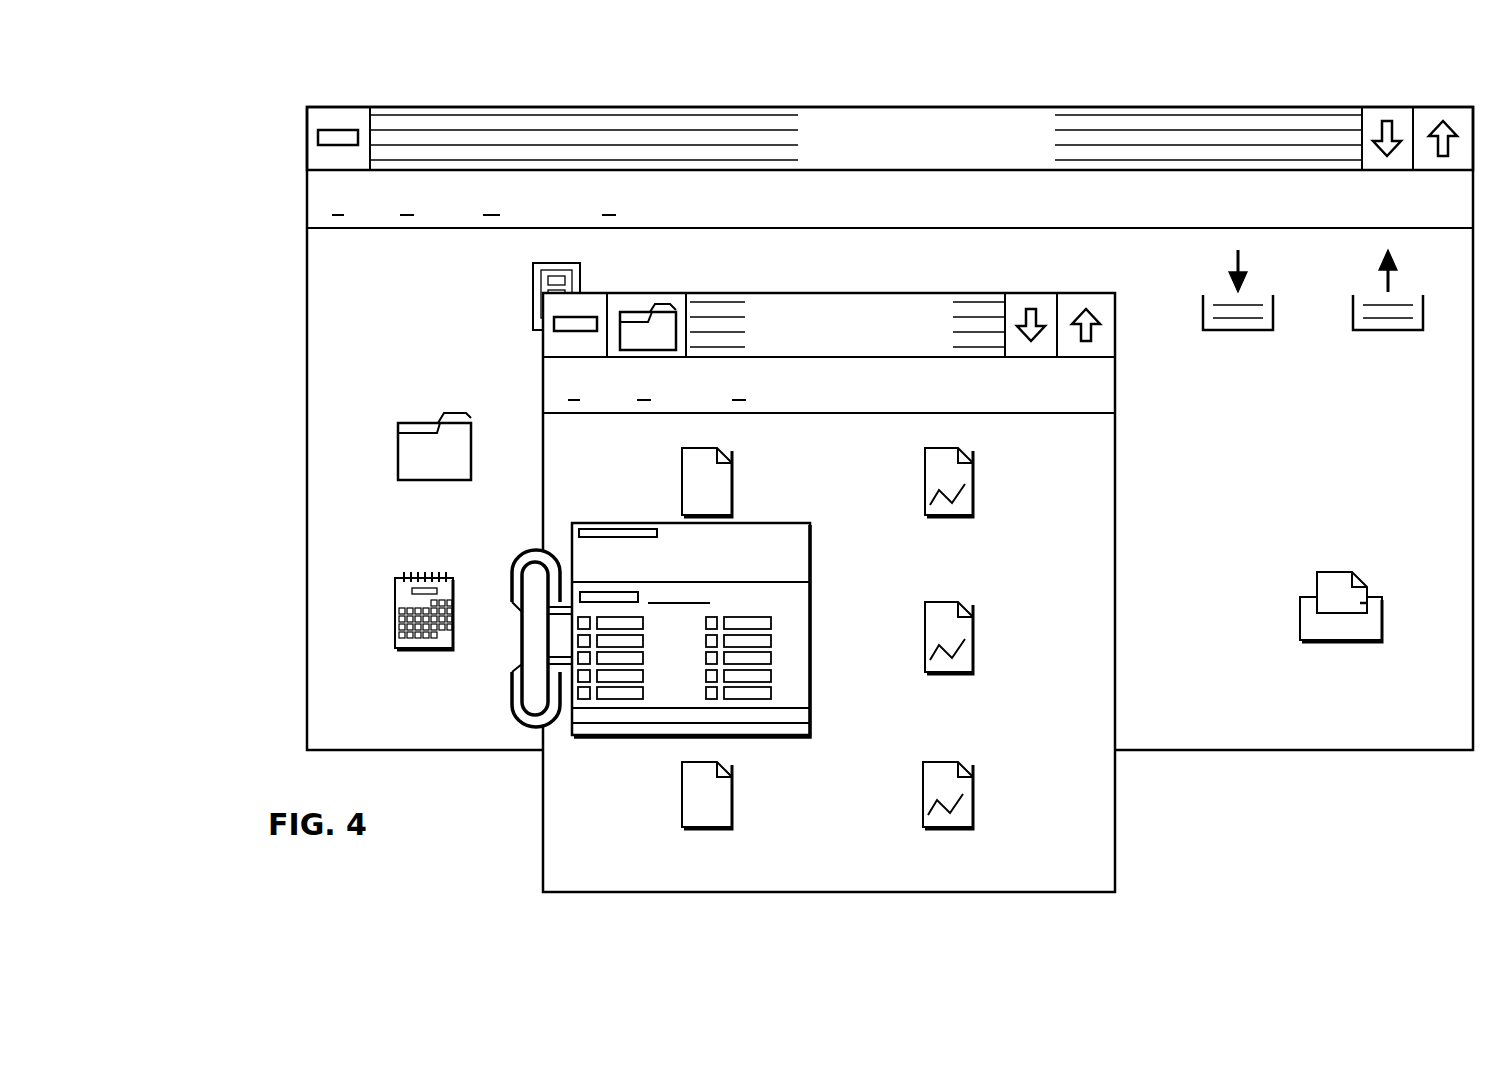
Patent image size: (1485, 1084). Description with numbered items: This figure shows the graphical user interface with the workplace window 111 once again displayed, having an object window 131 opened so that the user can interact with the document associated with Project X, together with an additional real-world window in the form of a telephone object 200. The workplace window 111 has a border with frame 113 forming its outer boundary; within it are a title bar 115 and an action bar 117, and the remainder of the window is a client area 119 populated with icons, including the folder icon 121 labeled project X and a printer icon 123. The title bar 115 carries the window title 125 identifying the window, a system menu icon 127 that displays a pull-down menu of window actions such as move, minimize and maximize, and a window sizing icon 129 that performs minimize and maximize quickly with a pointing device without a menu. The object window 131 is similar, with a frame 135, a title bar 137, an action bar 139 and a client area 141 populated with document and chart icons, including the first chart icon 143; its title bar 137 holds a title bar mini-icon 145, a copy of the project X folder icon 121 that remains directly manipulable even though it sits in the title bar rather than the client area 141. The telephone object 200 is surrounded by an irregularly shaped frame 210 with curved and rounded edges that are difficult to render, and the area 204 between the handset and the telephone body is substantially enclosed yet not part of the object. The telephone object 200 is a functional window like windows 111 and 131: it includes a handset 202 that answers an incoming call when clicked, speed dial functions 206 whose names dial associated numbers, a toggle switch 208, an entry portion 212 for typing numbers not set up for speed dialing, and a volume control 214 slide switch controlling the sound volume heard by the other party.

The workplace window 111 is at (257, 110).
The frame 113 is at (307, 475).
The title bar 115 is at (1195, 107).
The action bar 117 is at (350, 228).
The client area 119 is at (1265, 481).
The folder icon 121 is at (398, 450).
The printer icon 123 is at (1368, 598).
The window title 125 is at (921, 107).
The system menu icon 127 is at (340, 118).
The window sizing icon 129 is at (1385, 107).
The object window 131 is at (1115, 560).
The frame 135 is at (1115, 828).
The title bar 137 is at (862, 293).
The action bar 139 is at (835, 390).
The client area 141 is at (880, 637).
The chart 1 icon 143 is at (966, 458).
The title bar mini-icon 145 is at (633, 340).
The telephone object 200 is at (773, 738).
The handset 202 is at (513, 712).
The area 204 is at (565, 712).
The speed dial functions 206 is at (657, 675).
The toggle switch 208 is at (687, 602).
The irregularly shaped frame 210 is at (590, 523).
The entry portion 212 is at (632, 550).
The volume control 214 is at (640, 581).